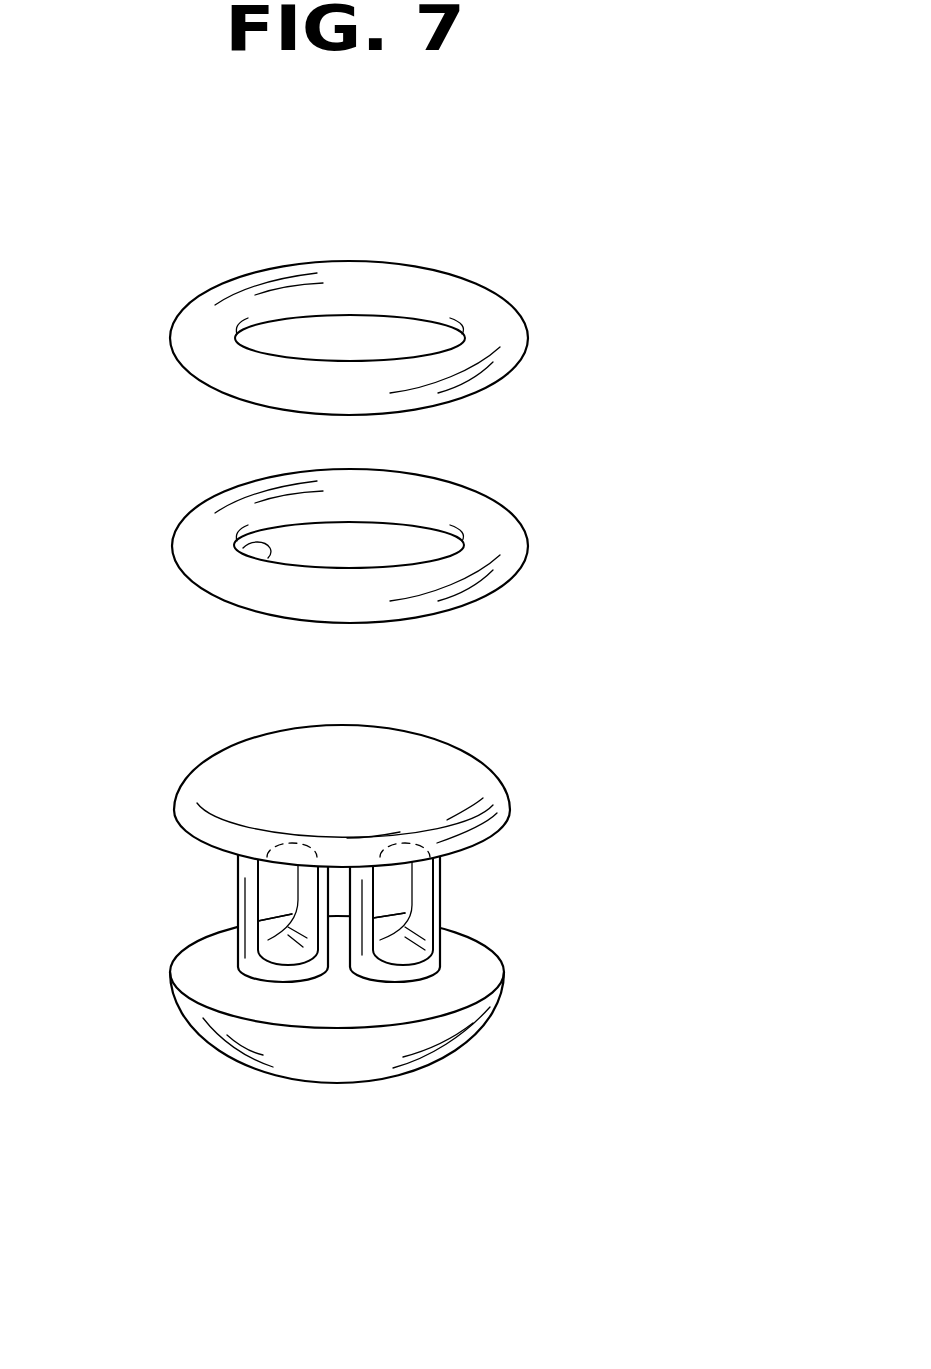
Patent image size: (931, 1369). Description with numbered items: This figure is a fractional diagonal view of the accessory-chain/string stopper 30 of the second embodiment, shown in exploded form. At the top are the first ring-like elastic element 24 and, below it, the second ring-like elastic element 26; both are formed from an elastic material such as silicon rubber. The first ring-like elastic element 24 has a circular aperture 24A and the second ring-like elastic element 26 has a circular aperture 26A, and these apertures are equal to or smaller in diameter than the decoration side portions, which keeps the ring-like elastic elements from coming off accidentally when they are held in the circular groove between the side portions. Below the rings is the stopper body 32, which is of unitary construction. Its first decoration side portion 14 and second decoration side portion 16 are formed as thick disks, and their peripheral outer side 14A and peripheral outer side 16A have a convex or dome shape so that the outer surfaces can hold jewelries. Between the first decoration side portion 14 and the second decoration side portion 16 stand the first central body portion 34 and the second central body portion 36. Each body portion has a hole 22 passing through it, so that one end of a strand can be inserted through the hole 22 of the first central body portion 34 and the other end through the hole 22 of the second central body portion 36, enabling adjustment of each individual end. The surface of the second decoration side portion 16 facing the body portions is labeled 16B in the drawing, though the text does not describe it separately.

The accessory-chain/string stopper 30 is at (716, 312).
The first ring-like elastic element 24 is at (406, 280).
The circular aperture 24A is at (423, 280).
The second ring-like elastic element 26 is at (368, 568).
The circular aperture 26A is at (243, 548).
The stopper body 32 is at (622, 791).
The first decoration side portion 14 is at (399, 766).
The peripheral outer side 14A is at (438, 762).
The first central body portion 34 is at (232, 892).
The second central body portion 36 is at (458, 900).
The hole 22 is at (277, 947).
The second decoration side portion 16 is at (346, 1043).
The peripheral outer side 16A is at (377, 1055).
The base top surface 16B is at (313, 1013).